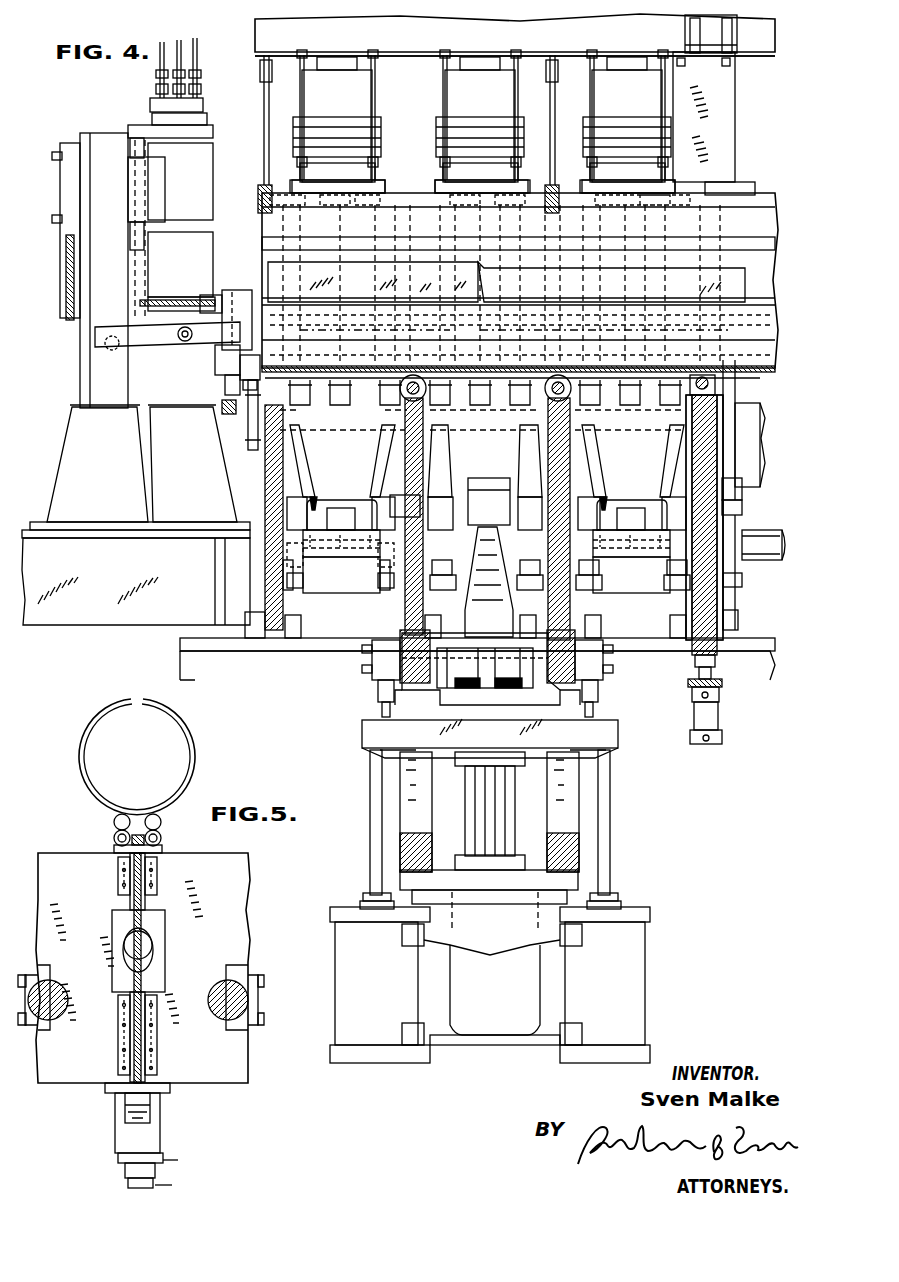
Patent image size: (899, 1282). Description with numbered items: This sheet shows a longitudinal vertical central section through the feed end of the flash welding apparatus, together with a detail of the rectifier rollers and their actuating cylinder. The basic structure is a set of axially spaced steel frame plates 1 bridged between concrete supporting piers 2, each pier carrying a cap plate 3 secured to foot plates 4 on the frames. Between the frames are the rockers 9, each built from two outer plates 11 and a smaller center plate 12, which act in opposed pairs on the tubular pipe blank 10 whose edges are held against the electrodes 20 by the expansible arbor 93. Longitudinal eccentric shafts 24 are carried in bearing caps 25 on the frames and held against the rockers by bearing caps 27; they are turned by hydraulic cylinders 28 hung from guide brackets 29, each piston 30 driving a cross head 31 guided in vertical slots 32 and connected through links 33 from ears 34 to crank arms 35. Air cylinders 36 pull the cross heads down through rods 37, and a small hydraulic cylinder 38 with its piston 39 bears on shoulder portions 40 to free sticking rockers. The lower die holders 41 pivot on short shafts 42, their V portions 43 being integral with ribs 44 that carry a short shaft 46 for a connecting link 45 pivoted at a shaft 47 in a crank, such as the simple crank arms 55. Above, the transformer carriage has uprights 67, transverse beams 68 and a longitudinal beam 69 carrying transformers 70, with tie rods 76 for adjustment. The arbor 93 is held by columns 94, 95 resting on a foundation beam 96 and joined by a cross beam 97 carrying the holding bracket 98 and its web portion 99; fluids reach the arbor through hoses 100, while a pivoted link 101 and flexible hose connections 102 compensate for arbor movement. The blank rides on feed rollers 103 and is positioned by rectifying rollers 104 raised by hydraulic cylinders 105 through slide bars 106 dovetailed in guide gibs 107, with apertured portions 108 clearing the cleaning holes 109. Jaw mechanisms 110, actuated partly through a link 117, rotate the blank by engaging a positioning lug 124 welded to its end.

In FIG. 4, the frame plates 1 is at (268, 571).
In FIG. 5, the frame plates 1 is at (75, 1084).
In FIG. 4, the supporting piers 2 is at (190, 666).
In FIG. 4, the cap plate 3 is at (180, 643).
In FIG. 4, the foot plates 4 is at (300, 629).
In FIG. 4, the rockers 9 is at (427, 180).
In FIG. 4, the pipe blank 10 is at (750, 258).
In FIG. 5, the pipe blank 10 is at (78, 747).
In FIG. 4, the outer plates 11 is at (292, 456).
In FIG. 4, the center plate 12 is at (330, 439).
In FIG. 4, the electrodes 20 is at (300, 244).
In FIG. 4, the shafts 24 is at (330, 545).
In FIG. 5, the shafts 24 is at (62, 991).
In FIG. 5, the bearing caps 25 is at (262, 996).
In FIG. 4, the bearing caps 27 is at (300, 586).
In FIG. 4, the hydraulic cylinders 28 is at (528, 979).
In FIG. 4, the guide brackets 29 is at (578, 849).
In FIG. 4, the piston 30 is at (475, 801).
In FIG. 4, the cross head 31 is at (610, 742).
In FIG. 4, the vertical slots 32 is at (420, 826).
In FIG. 4, the links 33 is at (505, 611).
In FIG. 4, the ears 34 is at (532, 689).
In FIG. 4, the crank arms 35 is at (505, 481).
In FIG. 4, the air cylinders 36 is at (370, 1041).
In FIG. 4, the rods 37 is at (372, 856).
In FIG. 4, the hydraulic cylinder 38 is at (378, 663).
In FIG. 4, the piston 39 is at (378, 699).
In FIG. 4, the shoulder portions 40 is at (398, 709).
In FIG. 4, the lower die holders 41 is at (665, 401).
In FIG. 4, the short shafts 42 is at (597, 312).
In FIG. 4, the V portions 43 is at (250, 441).
In FIG. 4, the ribs 44 is at (372, 506).
In FIG. 4, the connecting link 45 is at (497, 441).
In FIG. 4, the short shaft 46 is at (598, 416).
In FIG. 4, the shaft 47 is at (352, 550).
In FIG. 4, the crank arms 55 is at (312, 497).
In FIG. 4, the uprights 67 is at (736, 88).
In FIG. 4, the transverse beams 68 is at (686, 30).
In FIG. 4, the longitudinal beam 69 is at (417, 40).
In FIG. 4, the transformers 70 is at (455, 108).
In FIG. 4, the tie rods 76 is at (262, 100).
In FIG. 4, the expansible arbor 93 is at (300, 277).
In FIG. 4, the column 94 is at (205, 196).
In FIG. 4, the column 95 is at (80, 356).
In FIG. 4, the foundation beam 96 is at (80, 611).
In FIG. 4, the cross beam 97 is at (148, 189).
In FIG. 4, the holding bracket 98 is at (62, 241).
In FIG. 4, the web portion 99 is at (66, 263).
In FIG. 4, the hoses 100 is at (170, 56).
In FIG. 4, the pivoted link 101 is at (140, 353).
In FIG. 4, the flexible hose connections 102 is at (180, 297).
In FIG. 4, the feed rollers 103 is at (410, 375).
In FIG. 4, the rectifying rollers 104 is at (718, 384).
In FIG. 5, the rectifying rollers 104 is at (115, 833).
In FIG. 4, the hydraulic cylinders 105 is at (718, 711).
In FIG. 5, the hydraulic cylinders 105 is at (120, 1161).
In FIG. 4, the slide bars 106 is at (690, 601).
In FIG. 5, the slide bars 106 is at (160, 979).
In FIG. 5, the guide gibs 107 is at (117, 879).
In FIG. 4, the apertured portions 108 is at (742, 484).
In FIG. 5, the apertured portions 108 is at (150, 961).
In FIG. 4, the cleaning holes 109 is at (388, 501).
In FIG. 5, the cleaning holes 109 is at (142, 939).
In FIG. 4, the jaw mechanisms 110 is at (215, 363).
In FIG. 4, the link 117 is at (222, 419).
In FIG. 4, the positioning lug 124 is at (240, 373).